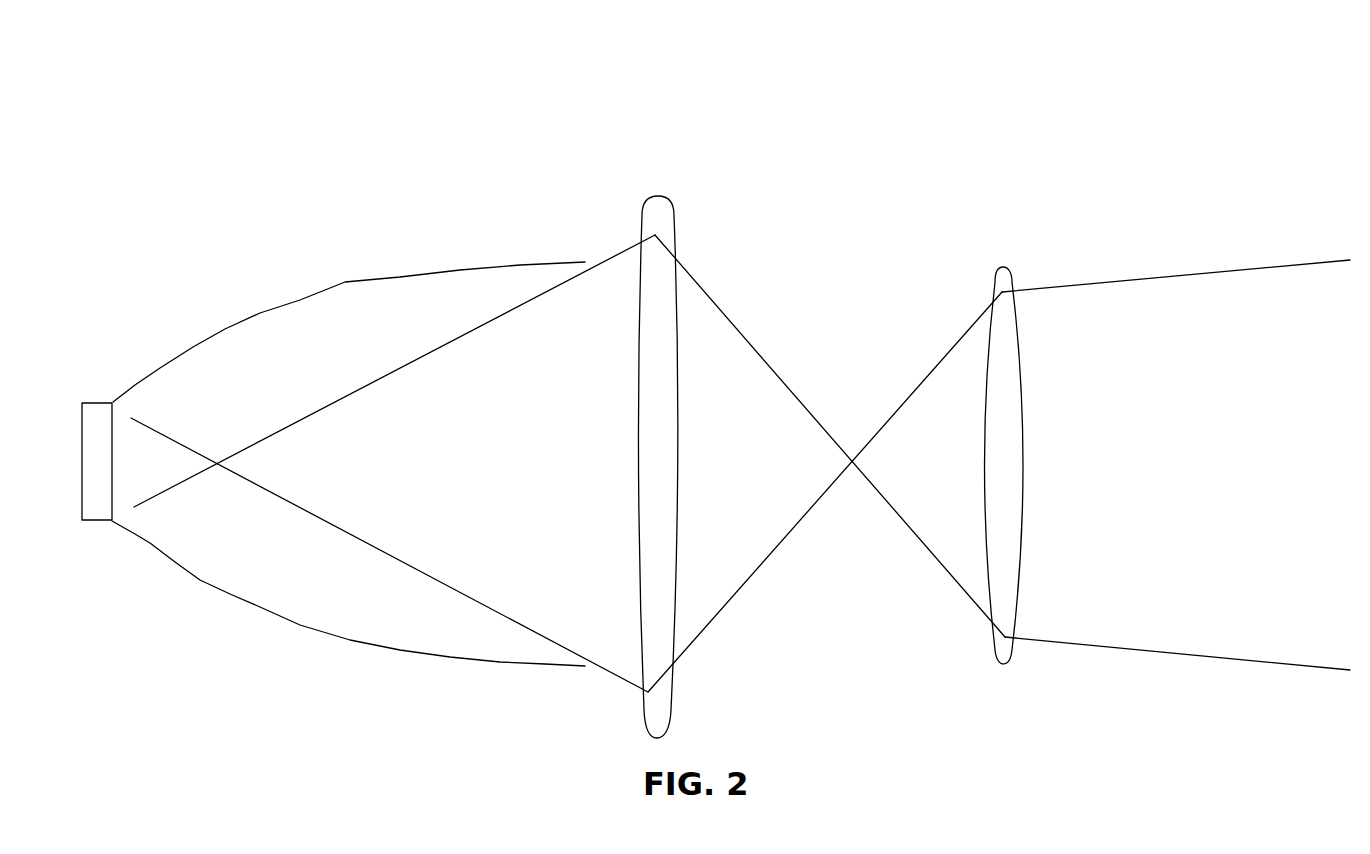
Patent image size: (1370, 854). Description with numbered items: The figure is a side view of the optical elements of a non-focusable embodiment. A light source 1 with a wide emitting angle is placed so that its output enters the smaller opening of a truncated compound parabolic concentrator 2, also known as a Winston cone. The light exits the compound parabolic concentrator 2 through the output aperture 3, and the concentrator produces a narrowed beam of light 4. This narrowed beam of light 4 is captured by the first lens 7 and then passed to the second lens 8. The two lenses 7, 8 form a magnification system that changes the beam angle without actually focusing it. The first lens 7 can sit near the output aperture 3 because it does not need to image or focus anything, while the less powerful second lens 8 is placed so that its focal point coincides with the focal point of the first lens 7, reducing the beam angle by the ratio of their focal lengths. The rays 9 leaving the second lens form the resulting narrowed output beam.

The light source 1 is at (96, 397).
The truncated compound parabolic concentrator 2 is at (349, 374).
The output aperture 3 is at (583, 248).
The narrowed beam of light 4 is at (612, 250).
The first lens 7 is at (665, 190).
The second lens 8 is at (1002, 262).
The parallel output rays 9 is at (1160, 272).